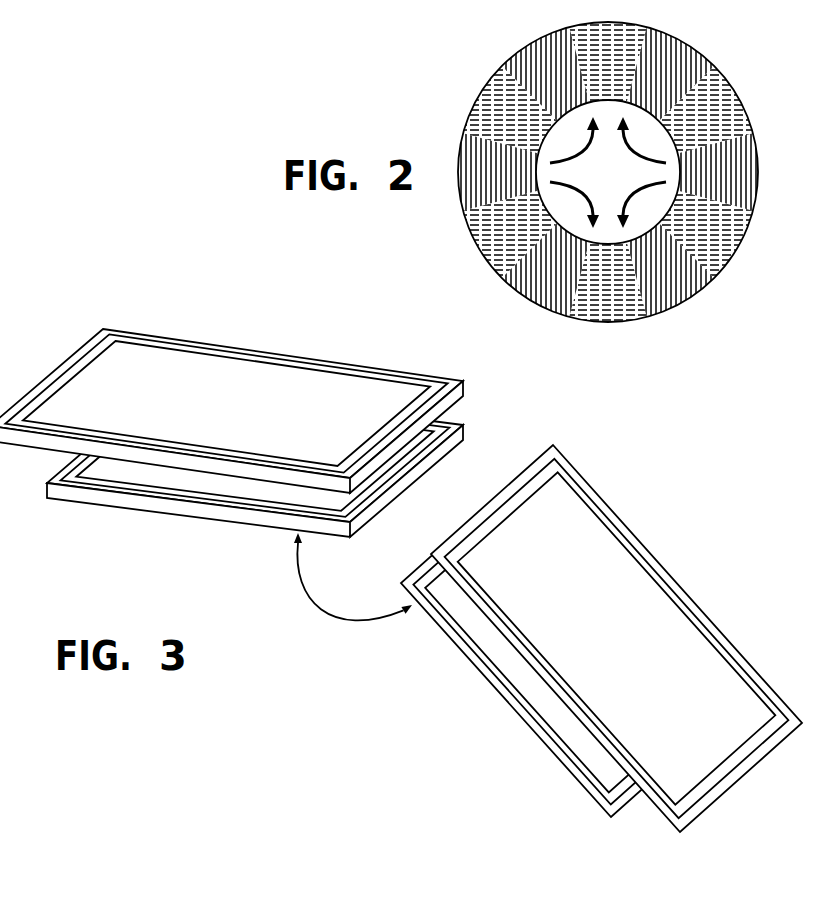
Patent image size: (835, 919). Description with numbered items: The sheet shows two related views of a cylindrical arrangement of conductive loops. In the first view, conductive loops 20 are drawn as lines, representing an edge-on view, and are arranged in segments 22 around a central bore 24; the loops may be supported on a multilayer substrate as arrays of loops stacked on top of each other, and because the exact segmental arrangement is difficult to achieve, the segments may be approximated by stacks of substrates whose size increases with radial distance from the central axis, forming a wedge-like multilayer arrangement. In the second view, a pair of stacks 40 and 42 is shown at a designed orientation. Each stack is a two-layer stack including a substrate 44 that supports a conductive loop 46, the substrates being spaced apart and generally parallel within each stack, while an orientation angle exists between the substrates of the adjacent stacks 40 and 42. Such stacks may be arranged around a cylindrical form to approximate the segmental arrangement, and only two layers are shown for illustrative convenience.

In FIG. 2, the conductive loops 20 is at (727, 118).
In FIG. 2, the segments 22 is at (752, 192).
In FIG. 2, the central bore 24 is at (568, 207).
In FIG. 3, the stack 40 is at (122, 532).
In FIG. 3, the stack 42 is at (474, 682).
In FIG. 3, the substrate 44 is at (140, 358).
In FIG. 3, the conductive loop 46 is at (250, 348).